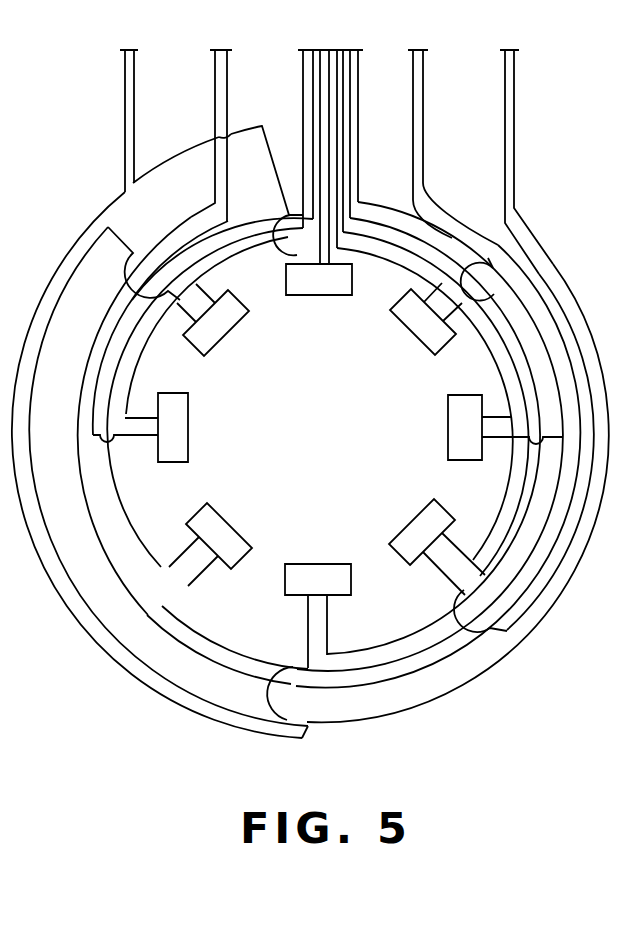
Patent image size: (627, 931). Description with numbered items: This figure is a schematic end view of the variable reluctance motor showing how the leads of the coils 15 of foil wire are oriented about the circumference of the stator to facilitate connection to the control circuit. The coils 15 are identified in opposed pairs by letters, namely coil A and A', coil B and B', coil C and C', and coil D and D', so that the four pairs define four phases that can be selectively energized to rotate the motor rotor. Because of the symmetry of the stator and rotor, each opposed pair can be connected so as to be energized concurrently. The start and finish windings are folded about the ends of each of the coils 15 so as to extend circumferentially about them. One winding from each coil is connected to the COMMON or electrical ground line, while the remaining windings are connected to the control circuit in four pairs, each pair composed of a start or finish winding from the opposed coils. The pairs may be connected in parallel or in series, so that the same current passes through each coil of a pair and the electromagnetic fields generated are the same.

The coils 15 is at (248, 312).
The coil A is at (160, 384).
The coil B is at (438, 359).
The coil C is at (193, 375).
The coil D is at (458, 376).
The common line COMMON is at (335, 351).